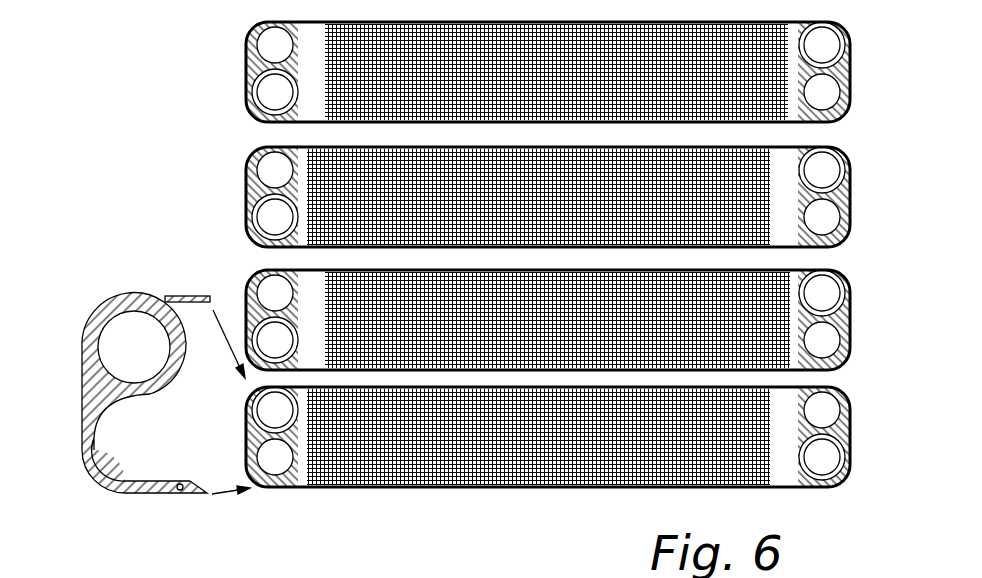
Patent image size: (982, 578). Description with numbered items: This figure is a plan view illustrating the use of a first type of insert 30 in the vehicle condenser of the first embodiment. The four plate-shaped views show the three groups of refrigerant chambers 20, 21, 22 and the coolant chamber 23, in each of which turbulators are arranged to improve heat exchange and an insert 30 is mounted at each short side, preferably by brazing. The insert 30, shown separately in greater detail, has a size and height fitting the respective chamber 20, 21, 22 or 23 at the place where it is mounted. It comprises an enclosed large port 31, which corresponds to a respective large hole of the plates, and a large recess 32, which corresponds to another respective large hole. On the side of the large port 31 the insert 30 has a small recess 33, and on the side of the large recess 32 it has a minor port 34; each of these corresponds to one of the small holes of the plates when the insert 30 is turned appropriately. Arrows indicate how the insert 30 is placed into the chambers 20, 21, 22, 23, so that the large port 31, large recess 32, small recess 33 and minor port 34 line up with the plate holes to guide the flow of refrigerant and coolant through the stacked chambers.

The refrigerant chamber 20 is at (790, 316).
The refrigerant chamber 21 is at (790, 193).
The refrigerant chamber 22 is at (790, 68).
The coolant chamber 23 is at (790, 433).
The insert 30 is at (131, 384).
The large port 31 is at (145, 323).
The large recess 32 is at (140, 448).
The small recess 33 is at (185, 302).
The minor port 34 is at (182, 492).